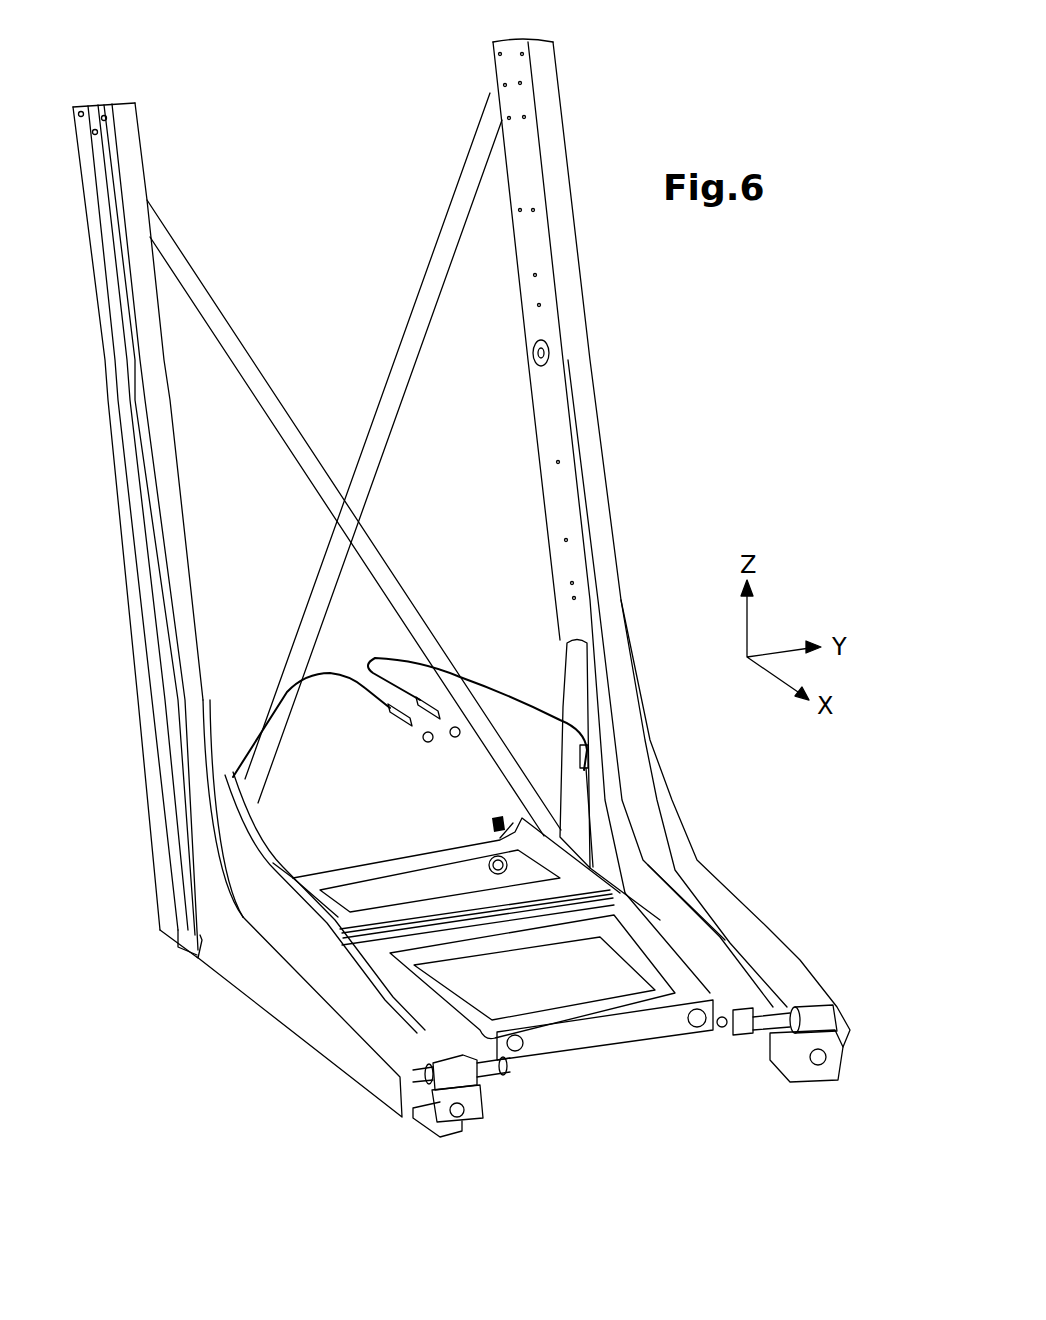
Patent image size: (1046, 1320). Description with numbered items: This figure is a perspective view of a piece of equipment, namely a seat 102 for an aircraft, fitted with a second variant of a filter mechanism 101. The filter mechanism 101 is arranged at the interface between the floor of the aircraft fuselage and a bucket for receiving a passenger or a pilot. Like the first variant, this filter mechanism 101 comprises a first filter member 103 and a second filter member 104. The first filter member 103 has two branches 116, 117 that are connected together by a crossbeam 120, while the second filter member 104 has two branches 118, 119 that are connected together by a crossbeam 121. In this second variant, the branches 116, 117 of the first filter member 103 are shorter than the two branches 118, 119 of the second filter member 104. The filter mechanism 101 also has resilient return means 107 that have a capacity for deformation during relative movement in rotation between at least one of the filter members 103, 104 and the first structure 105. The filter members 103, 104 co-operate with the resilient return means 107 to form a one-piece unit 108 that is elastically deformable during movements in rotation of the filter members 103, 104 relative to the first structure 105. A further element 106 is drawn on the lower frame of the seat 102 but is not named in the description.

The filter mechanism 101 is at (670, 1069).
The seat 102 is at (645, 430).
The first filter member 103 is at (388, 892).
The second filter member 104 is at (532, 1012).
The first structure 105 is at (453, 1133).
The left side rail 106 is at (313, 1015).
The resilient return means 107 is at (627, 897).
The one-piece unit 108 is at (623, 1028).
The branch 116 is at (567, 863).
The branch 117 is at (317, 910).
The branch 118 is at (680, 955).
The branch 119 is at (450, 1012).
The crossbeam 120 is at (458, 905).
The crossbeam 121 is at (570, 937).